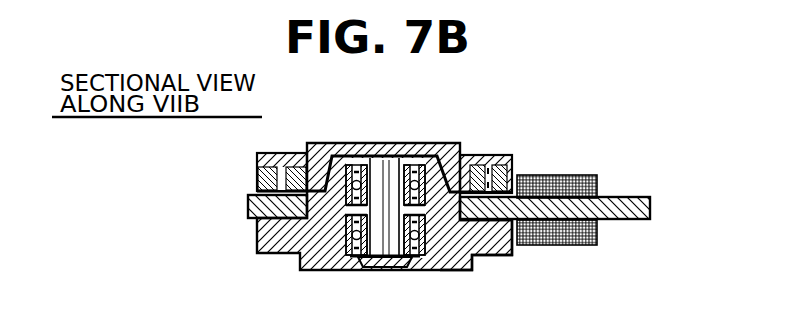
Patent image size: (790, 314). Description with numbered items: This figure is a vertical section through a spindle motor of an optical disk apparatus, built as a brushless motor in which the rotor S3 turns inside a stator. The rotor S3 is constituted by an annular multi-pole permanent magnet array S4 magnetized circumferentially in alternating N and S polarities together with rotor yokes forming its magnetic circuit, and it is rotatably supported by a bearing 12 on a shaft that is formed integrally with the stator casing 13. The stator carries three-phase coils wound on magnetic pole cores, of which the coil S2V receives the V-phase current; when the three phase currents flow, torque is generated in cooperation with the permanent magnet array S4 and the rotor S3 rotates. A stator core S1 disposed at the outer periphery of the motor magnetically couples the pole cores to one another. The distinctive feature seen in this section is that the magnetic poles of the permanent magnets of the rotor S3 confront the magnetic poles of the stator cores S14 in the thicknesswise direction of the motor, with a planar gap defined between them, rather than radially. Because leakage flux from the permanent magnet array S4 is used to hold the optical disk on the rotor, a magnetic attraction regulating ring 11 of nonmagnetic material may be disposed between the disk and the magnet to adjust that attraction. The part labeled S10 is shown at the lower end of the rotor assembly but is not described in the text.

The permanent magnet array S4 is at (257, 170).
The rotor S3 is at (386, 143).
The magnetic attraction regulating ring 11 is at (495, 155).
The coil S2V is at (567, 161).
The stator core S1 is at (633, 197).
The stator cores S14 is at (583, 245).
The bearing 12 is at (340, 270).
The shaft end cap S10 is at (386, 260).
The stator casing 13 is at (468, 258).